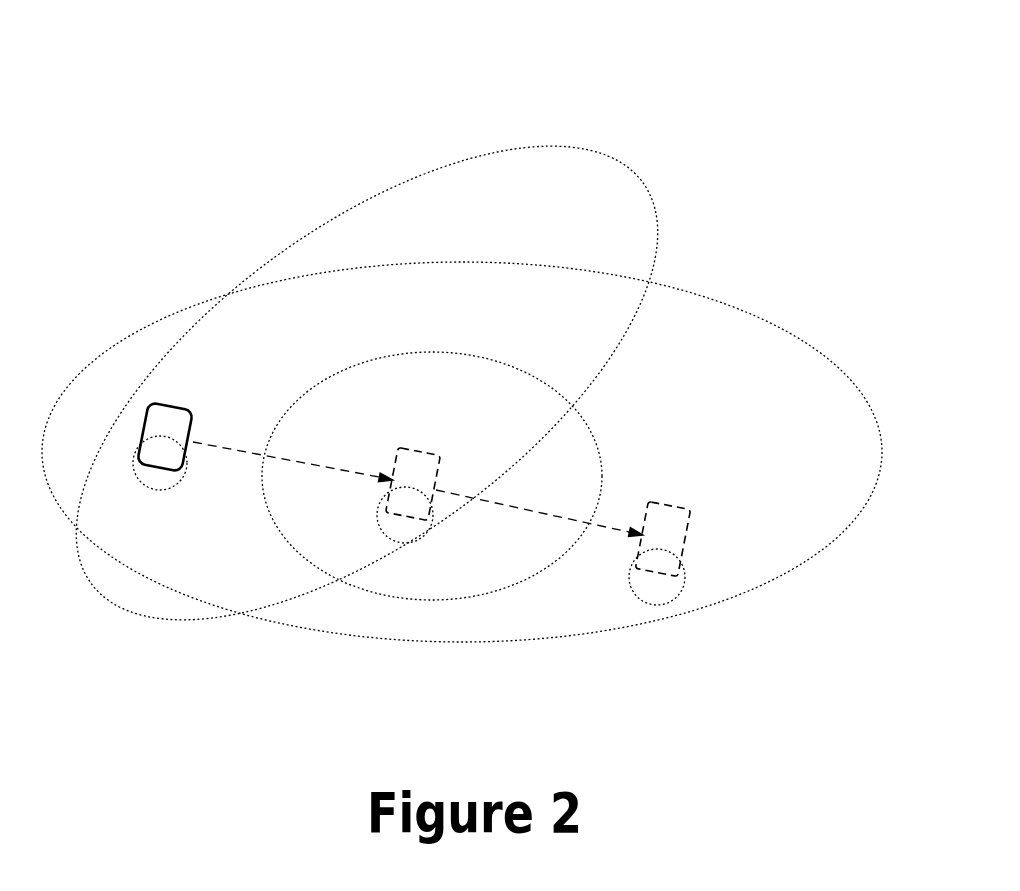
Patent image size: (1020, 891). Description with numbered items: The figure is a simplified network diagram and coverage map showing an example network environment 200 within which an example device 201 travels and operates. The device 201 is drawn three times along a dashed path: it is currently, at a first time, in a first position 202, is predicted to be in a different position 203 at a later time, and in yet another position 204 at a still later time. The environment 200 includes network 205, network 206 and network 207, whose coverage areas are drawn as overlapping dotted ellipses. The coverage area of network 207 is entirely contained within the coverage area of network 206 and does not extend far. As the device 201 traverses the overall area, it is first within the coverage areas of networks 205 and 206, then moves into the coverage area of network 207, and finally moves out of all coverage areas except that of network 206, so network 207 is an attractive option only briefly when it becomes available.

The network environment 200 is at (519, 58).
The device 201 is at (172, 404).
The first position 202 is at (150, 489).
The predicted position 203 is at (383, 522).
The later predicted position 204 is at (643, 586).
The network 205 is at (575, 184).
The network 206 is at (500, 291).
The network 207 is at (447, 394).